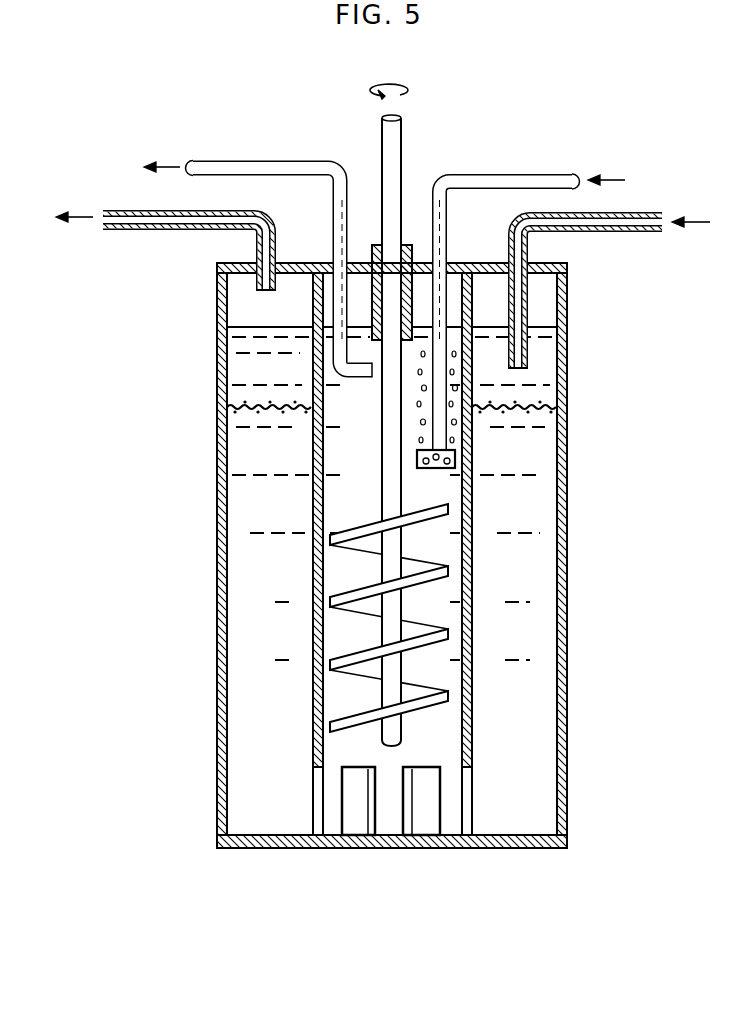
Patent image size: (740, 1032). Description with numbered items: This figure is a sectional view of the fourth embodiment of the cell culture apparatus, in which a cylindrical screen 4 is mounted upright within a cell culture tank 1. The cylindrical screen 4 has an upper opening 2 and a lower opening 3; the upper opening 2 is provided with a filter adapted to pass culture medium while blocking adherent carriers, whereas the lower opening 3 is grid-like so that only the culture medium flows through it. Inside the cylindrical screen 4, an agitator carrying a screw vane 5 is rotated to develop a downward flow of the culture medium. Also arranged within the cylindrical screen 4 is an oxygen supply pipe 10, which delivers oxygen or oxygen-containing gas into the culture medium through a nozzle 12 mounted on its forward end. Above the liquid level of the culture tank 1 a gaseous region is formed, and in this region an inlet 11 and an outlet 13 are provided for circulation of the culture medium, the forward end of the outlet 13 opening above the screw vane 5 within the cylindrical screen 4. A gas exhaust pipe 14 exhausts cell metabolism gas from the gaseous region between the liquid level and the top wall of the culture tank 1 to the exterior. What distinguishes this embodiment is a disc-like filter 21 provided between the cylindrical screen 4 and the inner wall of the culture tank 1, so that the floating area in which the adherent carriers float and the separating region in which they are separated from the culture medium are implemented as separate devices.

The cell culture tank 1 is at (560, 602).
The upper opening 2 is at (467, 312).
The disc-like filter 21 is at (530, 412).
The lower opening 3 is at (473, 812).
The cylindrical screen 4 is at (473, 673).
The screw vane 5 is at (438, 708).
The oxygen supply pipe 10 is at (542, 178).
The inlet 11 is at (647, 212).
The nozzle 12 is at (455, 472).
The outlet 13 is at (247, 163).
The gas exhaust pipe 14 is at (118, 210).